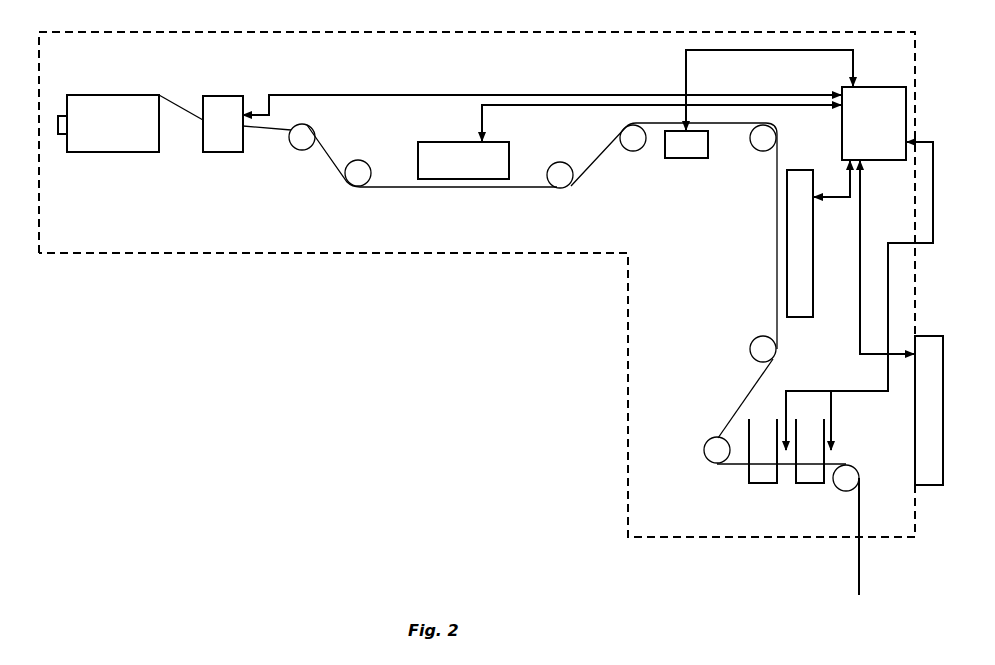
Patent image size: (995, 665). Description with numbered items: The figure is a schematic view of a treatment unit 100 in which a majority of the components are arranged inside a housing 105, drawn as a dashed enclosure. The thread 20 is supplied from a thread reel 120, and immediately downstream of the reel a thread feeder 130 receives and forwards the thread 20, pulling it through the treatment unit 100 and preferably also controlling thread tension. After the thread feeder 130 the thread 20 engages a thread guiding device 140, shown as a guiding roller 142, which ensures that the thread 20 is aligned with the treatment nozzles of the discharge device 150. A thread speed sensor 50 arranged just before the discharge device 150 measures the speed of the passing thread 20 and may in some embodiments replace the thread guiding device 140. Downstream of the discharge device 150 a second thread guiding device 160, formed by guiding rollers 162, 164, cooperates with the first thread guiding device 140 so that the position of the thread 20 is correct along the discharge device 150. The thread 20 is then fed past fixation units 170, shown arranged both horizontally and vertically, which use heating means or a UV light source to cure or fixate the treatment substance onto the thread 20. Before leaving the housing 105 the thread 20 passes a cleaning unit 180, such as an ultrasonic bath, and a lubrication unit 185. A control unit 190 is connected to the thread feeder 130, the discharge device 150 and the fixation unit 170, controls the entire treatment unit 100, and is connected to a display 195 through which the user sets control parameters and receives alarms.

The treatment unit 100 is at (486, 293).
The housing 105 is at (333, 254).
The thread reel 120 is at (140, 153).
The thread 20 is at (190, 118).
The thread feeder 130 is at (222, 153).
The thread guiding device 140 is at (306, 172).
The guiding roller 142 is at (307, 139).
The thread speed sensor 50 is at (367, 162).
The discharge device 150 is at (452, 180).
The thread guiding device 160 is at (607, 187).
The guiding roller 162 is at (566, 186).
The guiding roller 164 is at (642, 144).
The fixation unit 170 is at (688, 158).
The control unit 190 is at (876, 160).
The display 195 is at (932, 486).
The cleaning unit 180 is at (749, 472).
The lubrication unit 185 is at (806, 484).